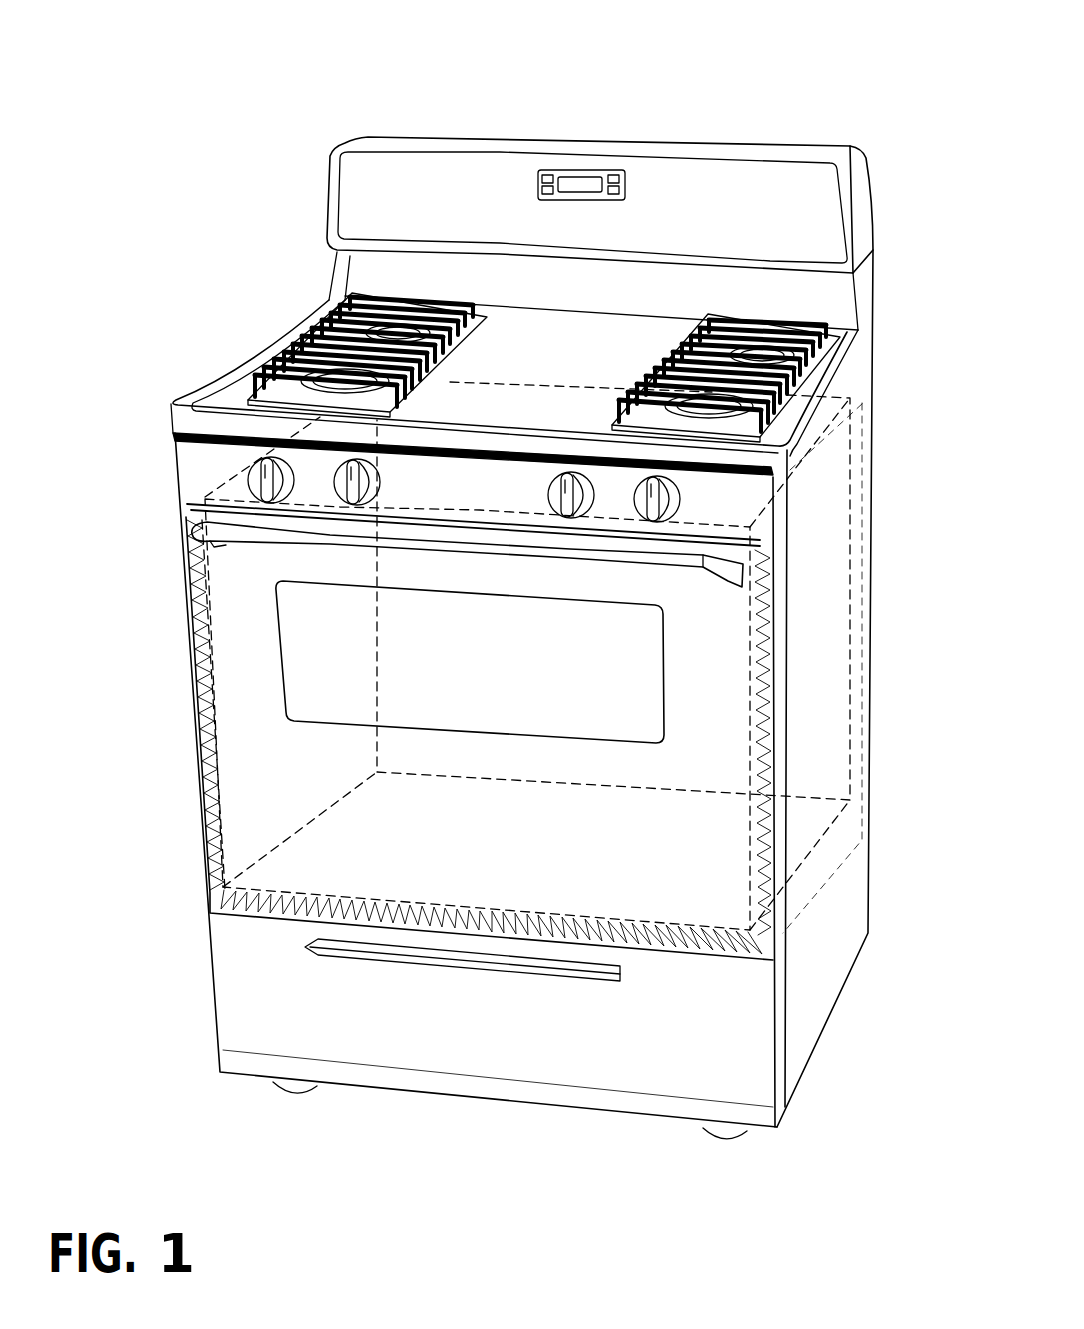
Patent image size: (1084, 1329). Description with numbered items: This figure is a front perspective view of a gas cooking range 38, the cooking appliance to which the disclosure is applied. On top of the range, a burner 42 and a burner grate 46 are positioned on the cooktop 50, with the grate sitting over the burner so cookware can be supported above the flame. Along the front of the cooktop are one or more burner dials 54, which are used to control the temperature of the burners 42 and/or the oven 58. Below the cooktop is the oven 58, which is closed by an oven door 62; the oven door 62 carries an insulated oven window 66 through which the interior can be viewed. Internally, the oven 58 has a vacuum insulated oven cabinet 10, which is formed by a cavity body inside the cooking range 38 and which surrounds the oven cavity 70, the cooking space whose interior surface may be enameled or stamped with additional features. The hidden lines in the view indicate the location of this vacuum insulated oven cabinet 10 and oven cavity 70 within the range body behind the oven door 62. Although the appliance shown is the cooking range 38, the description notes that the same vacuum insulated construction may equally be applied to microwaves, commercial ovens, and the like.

The vacuum insulated oven cabinet 10 is at (200, 461).
The cooking range 38 is at (418, 118).
The burner 42 is at (577, 480).
The burner grate 46 is at (280, 366).
The cooktop 50 is at (618, 347).
The burner dial 54 is at (667, 475).
The oven 58 is at (822, 667).
The oven door 62 is at (777, 829).
The insulated oven window 66 is at (330, 660).
The oven cavity 70 is at (400, 750).